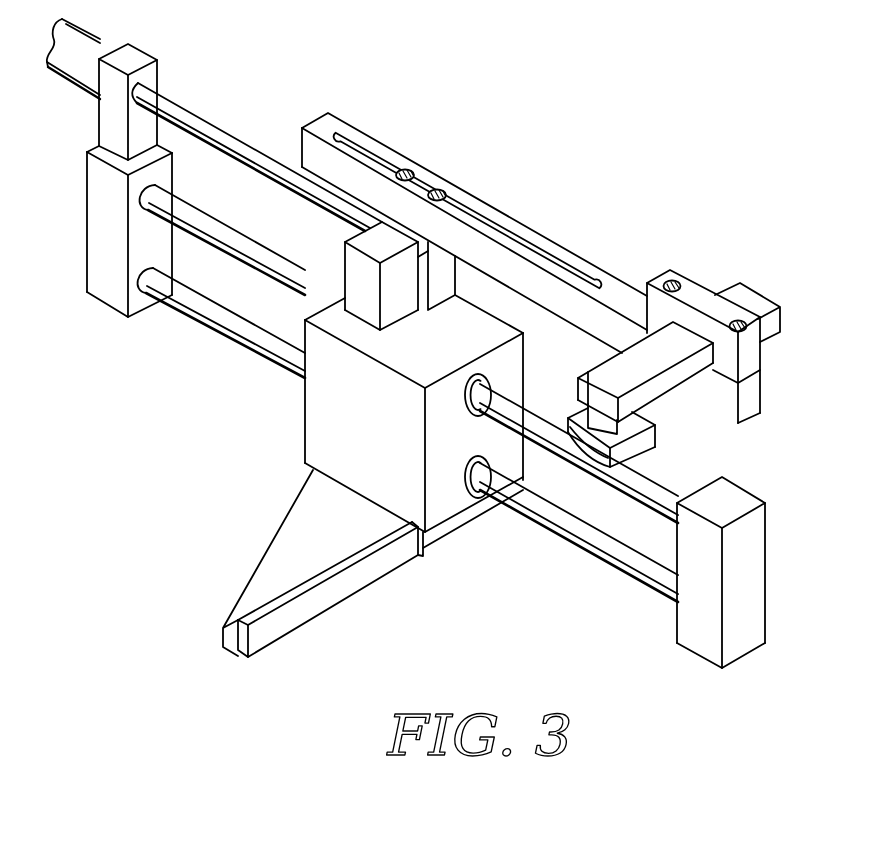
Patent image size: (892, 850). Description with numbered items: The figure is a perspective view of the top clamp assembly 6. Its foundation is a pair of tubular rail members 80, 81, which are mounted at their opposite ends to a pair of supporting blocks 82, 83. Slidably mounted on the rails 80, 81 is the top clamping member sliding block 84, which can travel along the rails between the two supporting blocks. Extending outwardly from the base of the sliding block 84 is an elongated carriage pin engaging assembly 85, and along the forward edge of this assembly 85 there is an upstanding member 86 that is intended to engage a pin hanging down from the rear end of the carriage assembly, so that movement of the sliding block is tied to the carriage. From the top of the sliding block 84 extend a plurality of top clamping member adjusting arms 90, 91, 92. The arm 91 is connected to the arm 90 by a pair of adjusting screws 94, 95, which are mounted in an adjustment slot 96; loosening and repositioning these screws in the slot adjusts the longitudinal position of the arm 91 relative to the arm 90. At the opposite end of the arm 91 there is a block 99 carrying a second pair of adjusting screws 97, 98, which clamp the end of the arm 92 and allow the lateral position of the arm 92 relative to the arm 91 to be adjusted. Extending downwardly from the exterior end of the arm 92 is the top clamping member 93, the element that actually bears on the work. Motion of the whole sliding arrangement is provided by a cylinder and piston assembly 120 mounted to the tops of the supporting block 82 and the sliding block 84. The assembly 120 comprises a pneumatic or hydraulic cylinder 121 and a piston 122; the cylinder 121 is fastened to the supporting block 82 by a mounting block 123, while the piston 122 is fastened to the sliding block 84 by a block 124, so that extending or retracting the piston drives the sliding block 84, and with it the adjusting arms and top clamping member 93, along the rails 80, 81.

The top clamp assembly 6 is at (557, 214).
The tubular rail member 80 is at (235, 247).
The tubular rail member 81 is at (227, 327).
The supporting block 82 is at (115, 300).
The supporting block 83 is at (707, 647).
The top clamping member sliding block 84 is at (315, 405).
The carriage pin engaging assembly 85 is at (279, 518).
The upstanding member 86 is at (347, 585).
The top clamping member adjusting arm 90 is at (440, 293).
The top clamping member adjusting arm 91 is at (474, 233).
The top clamping member adjusting arm 92 is at (668, 404).
The top clamping member 93 is at (640, 442).
The adjusting screw 94 is at (414, 168).
The adjusting screw 95 is at (447, 186).
The adjustment slot 96 is at (503, 228).
The adjusting screw 97 is at (680, 283).
The adjusting screw 98 is at (742, 320).
The block 99 is at (717, 322).
The cylinder and piston assembly 120 is at (182, 76).
The cylinder 121 is at (87, 44).
The piston 122 is at (222, 137).
The mounting block 123 is at (137, 58).
The block 124 is at (390, 313).